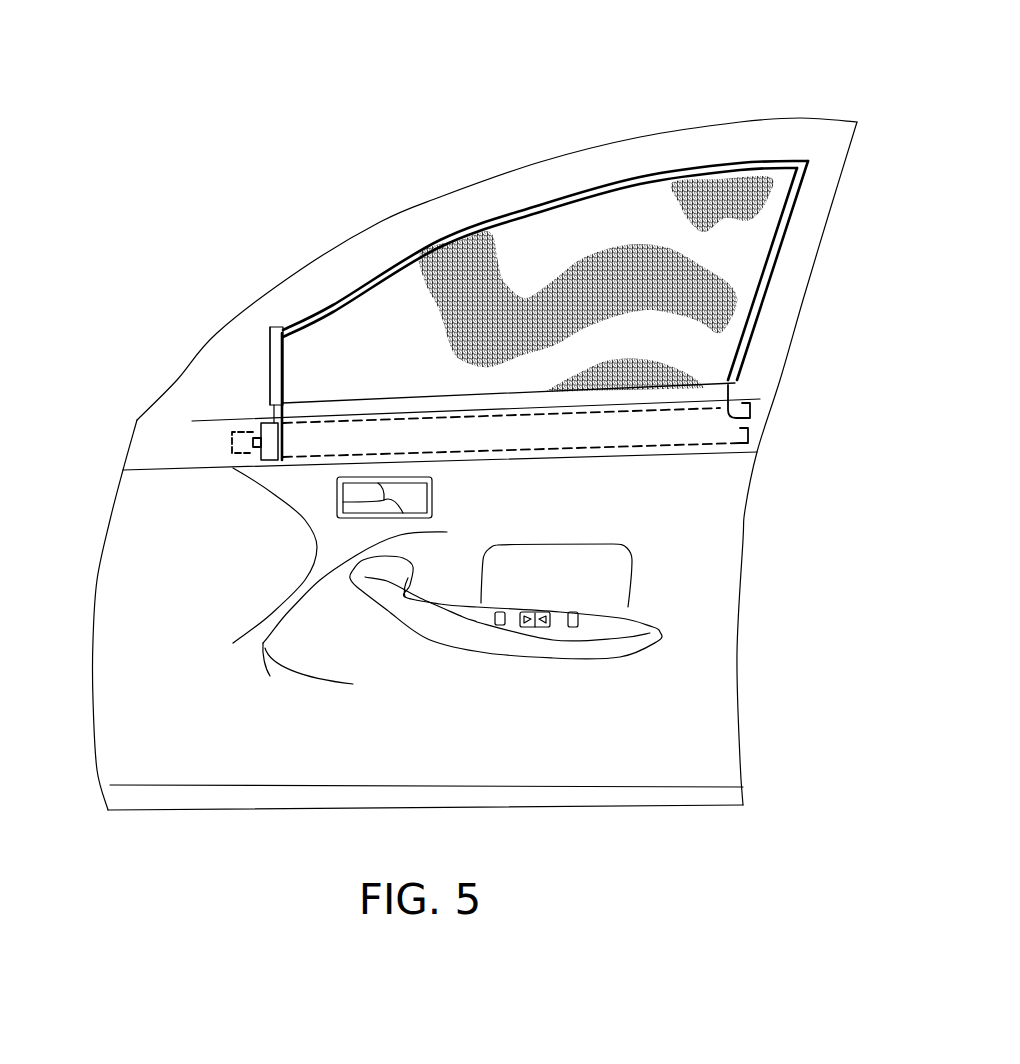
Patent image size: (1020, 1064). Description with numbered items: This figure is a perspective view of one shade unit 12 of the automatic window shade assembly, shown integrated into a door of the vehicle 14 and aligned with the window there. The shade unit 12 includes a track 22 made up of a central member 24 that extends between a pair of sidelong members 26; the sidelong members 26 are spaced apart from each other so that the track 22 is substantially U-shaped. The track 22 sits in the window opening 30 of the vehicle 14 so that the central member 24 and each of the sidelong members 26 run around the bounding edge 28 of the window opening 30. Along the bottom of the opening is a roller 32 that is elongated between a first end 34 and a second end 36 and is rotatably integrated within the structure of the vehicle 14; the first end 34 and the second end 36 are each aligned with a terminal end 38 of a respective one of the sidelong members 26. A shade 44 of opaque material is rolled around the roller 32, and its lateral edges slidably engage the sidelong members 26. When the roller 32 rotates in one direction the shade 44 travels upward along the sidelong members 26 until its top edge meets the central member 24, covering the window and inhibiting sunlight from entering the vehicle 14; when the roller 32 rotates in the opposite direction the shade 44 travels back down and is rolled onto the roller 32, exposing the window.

The shade unit 12 is at (578, 234).
The vehicle 14 is at (702, 173).
The track 22 is at (282, 327).
The central member 24 is at (622, 182).
The sidelong members 26 is at (273, 357).
The bounding edge 28 is at (363, 282).
The window opening 30 is at (793, 217).
The roller 32 is at (697, 453).
The first end 34 is at (232, 443).
The second end 36 is at (750, 431).
The terminal end 38 is at (277, 460).
The shade 44 is at (500, 273).